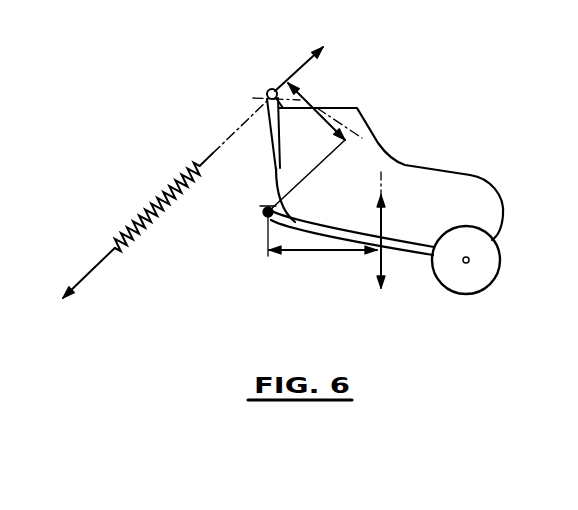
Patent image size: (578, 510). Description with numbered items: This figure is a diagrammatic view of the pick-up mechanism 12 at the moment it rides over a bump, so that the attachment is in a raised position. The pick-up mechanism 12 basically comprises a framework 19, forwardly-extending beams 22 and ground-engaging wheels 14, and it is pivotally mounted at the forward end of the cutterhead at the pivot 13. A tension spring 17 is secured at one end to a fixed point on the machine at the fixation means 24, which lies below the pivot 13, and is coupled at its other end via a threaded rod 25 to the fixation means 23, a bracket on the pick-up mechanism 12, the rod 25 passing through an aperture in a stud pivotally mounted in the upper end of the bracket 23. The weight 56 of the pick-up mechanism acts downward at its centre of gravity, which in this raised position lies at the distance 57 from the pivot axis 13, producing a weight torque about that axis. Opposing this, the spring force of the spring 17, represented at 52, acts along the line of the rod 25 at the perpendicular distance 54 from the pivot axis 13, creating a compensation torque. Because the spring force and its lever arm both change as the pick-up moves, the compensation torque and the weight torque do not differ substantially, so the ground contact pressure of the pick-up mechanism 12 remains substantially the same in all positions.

The pick-up mechanism 12 is at (430, 160).
The pivot 13 is at (263, 218).
The ground-engaging wheels 14 is at (502, 260).
The tension spring 17 is at (147, 212).
The framework 19 is at (500, 194).
The forwardly-extending beams 22 is at (289, 230).
The fixation means 23 is at (270, 125).
The fixation means 24 is at (122, 248).
The threaded rod 25 is at (230, 137).
The spring force 52 is at (93, 269).
The perpendicular distance 54 is at (305, 100).
The weight 56 is at (386, 262).
The distance 57 is at (337, 253).